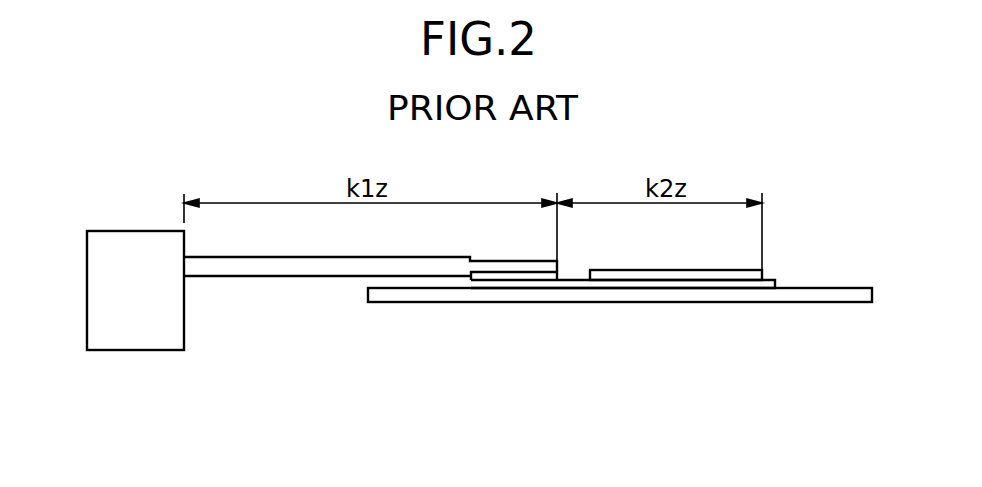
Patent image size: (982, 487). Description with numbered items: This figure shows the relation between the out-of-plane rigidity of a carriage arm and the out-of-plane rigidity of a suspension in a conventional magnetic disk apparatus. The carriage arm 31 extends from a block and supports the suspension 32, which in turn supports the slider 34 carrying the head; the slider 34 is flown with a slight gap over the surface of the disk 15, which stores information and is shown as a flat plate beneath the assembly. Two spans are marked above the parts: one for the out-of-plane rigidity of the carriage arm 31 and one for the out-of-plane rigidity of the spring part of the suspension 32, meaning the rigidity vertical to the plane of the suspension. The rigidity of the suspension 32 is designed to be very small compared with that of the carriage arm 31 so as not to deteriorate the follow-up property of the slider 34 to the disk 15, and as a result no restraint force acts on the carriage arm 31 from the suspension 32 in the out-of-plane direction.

The carriage arm 31 is at (298, 270).
The suspension 32 is at (608, 278).
The slider 34 is at (753, 285).
The disk 15 is at (835, 302).